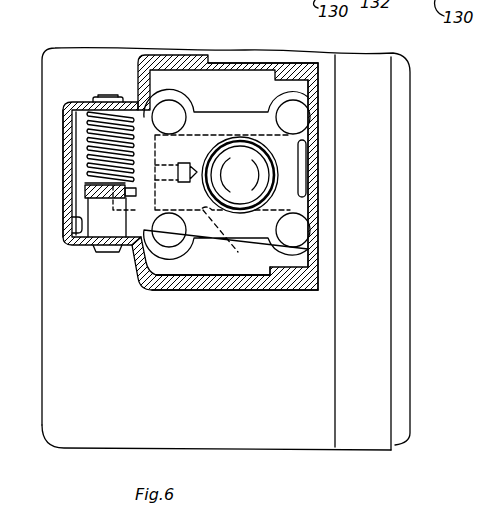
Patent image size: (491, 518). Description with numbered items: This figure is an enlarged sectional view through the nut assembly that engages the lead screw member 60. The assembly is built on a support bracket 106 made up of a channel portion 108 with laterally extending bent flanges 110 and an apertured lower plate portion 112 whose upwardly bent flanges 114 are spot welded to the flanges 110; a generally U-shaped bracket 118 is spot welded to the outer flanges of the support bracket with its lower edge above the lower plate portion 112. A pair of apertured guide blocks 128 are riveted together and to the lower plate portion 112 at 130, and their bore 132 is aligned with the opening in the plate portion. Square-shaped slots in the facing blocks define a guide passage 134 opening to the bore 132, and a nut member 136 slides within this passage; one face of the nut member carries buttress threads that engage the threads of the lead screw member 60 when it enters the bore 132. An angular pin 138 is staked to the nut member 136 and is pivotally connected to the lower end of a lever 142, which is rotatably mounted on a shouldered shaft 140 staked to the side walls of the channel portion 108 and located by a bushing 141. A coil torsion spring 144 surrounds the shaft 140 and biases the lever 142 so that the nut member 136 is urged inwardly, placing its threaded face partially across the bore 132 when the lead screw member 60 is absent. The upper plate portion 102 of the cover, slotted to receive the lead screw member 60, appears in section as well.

The lead screw member 60 is at (218, 186).
The upper plate portion 102 is at (56, 419).
The support bracket 106 is at (55, 219).
The channel portion 108 is at (63, 150).
The bent flanges 110 is at (167, 62).
The lower plate portion 112 is at (208, 268).
The bent flanges 114 is at (224, 64).
The U-shaped bracket 118 is at (312, 170).
The guide blocks 128 is at (218, 116).
The rivets 130 is at (171, 114).
The bore 132 is at (248, 192).
The guide passage 134 is at (232, 237).
The nut member 136 is at (244, 160).
The angular pin 138 is at (115, 181).
The shouldered shaft 140 is at (110, 96).
The bushing 141 is at (107, 228).
The lever 142 is at (88, 190).
The coil torsion spring 144 is at (83, 125).